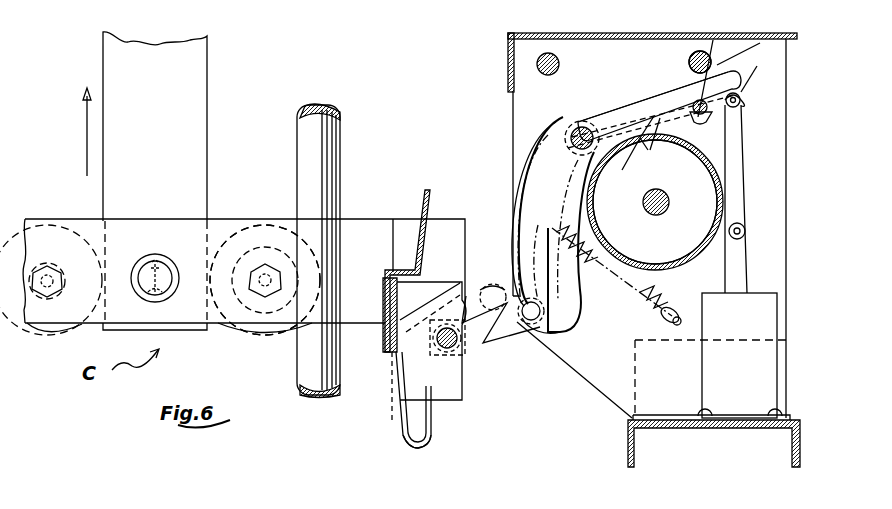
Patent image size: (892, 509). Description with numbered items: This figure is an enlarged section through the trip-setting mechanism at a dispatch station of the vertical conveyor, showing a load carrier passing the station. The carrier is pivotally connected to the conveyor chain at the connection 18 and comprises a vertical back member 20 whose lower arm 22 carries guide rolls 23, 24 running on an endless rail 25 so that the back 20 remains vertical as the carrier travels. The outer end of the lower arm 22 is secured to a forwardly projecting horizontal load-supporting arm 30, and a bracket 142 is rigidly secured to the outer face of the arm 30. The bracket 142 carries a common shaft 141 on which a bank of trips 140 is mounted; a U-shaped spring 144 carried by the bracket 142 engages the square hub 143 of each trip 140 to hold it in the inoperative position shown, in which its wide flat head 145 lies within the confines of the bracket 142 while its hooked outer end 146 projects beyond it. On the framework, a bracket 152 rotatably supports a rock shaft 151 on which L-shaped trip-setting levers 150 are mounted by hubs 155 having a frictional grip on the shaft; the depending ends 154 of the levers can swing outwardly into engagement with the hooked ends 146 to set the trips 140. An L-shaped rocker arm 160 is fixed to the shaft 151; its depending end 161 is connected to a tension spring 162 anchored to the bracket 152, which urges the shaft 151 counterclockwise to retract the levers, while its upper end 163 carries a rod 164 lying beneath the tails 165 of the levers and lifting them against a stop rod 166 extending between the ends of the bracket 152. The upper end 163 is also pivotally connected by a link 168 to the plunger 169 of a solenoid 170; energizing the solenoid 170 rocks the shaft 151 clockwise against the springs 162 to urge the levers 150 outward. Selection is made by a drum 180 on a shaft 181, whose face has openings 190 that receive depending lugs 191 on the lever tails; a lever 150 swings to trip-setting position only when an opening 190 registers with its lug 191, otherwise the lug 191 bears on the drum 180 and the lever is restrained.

The pivotal connection 18 is at (165, 272).
The vertical back member 20 is at (196, 130).
The lower arm 22 is at (215, 225).
The guide roll 23 is at (258, 215).
The guide roll 24 is at (50, 240).
The endless rail 25 is at (330, 160).
The load-supporting arm 30 is at (385, 355).
The trip 140 is at (470, 372).
The shaft 141 is at (433, 405).
The bracket 142 is at (385, 282).
The square hub 143 is at (415, 372).
The U-shaped spring 144 is at (413, 448).
The head 145 is at (465, 292).
The hooked outer end 146 is at (468, 335).
The trip-setting lever 150 is at (654, 109).
The rock shaft 151 is at (585, 122).
The bracket 152 is at (522, 112).
The depending end 154 is at (585, 335).
The hub 155 is at (576, 125).
The rocker arm 160 is at (630, 160).
The depending end 161 is at (545, 240).
The tension spring 162 is at (590, 262).
The upper end 163 is at (761, 78).
The rod 164 is at (741, 101).
The tail 165 is at (710, 66).
The stop rod 166 is at (690, 66).
The link 168 is at (742, 195).
The plunger 169 is at (710, 335).
The solenoid 170 is at (710, 377).
The drum 180 is at (716, 196).
The shaft 181 is at (650, 214).
The opening 190 is at (651, 146).
The lug 191 is at (736, 78).